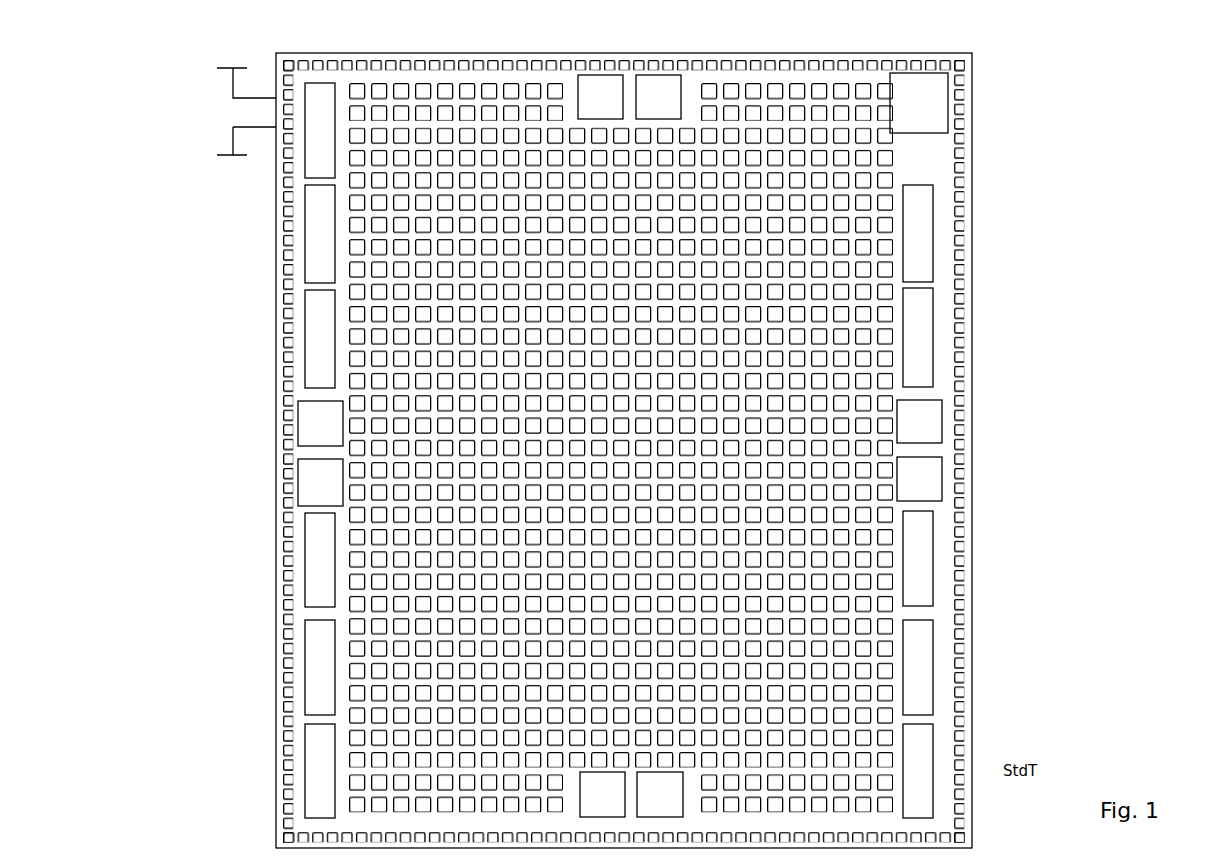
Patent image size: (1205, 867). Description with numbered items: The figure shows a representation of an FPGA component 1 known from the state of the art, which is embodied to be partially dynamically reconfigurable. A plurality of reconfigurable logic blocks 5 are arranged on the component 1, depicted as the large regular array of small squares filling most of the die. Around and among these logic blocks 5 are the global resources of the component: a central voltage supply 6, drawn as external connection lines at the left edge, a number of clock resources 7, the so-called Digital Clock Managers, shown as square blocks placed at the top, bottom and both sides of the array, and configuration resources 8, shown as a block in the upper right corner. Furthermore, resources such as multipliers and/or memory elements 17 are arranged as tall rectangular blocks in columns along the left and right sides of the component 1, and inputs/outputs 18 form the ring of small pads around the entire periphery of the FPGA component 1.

The FPGA component 1 is at (256, 540).
The reconfigurable logic blocks 5 is at (747, 128).
The central voltage supply 6 is at (247, 110).
The clock resources 7 is at (660, 85).
The configuration resources 8 is at (936, 88).
The multipliers and/or memory elements 17 is at (317, 172).
The inputs/outputs 18 is at (521, 62).